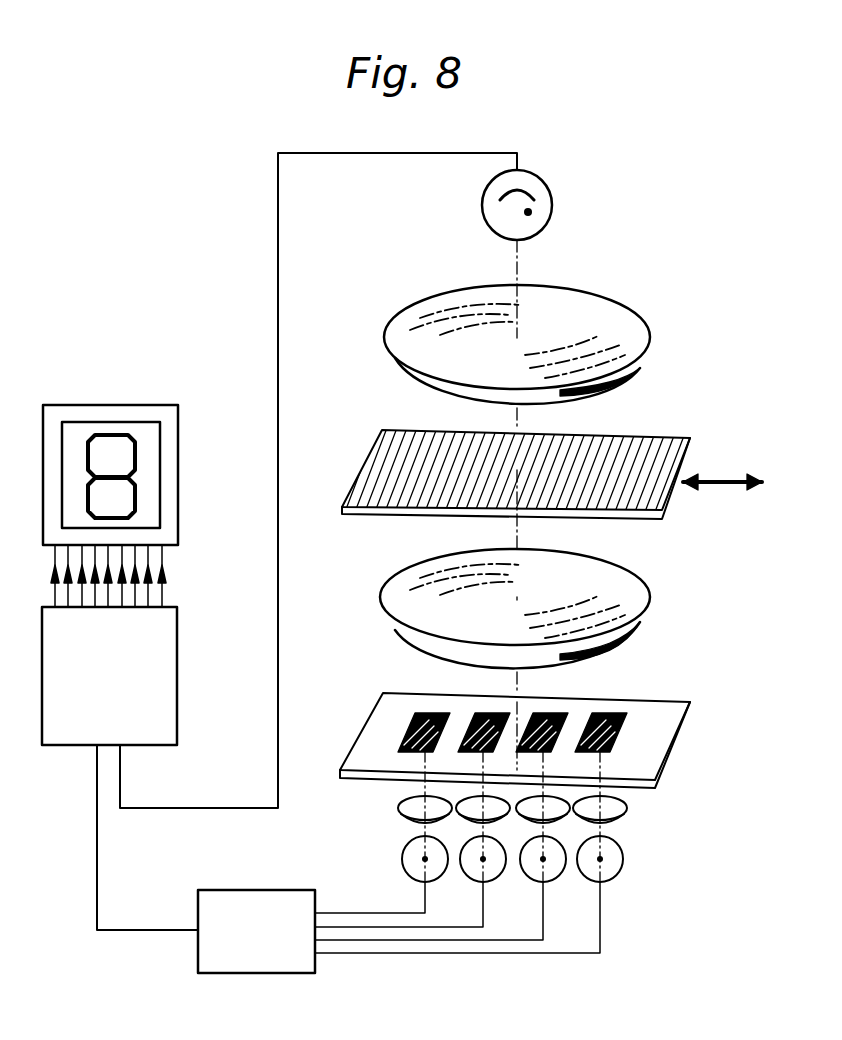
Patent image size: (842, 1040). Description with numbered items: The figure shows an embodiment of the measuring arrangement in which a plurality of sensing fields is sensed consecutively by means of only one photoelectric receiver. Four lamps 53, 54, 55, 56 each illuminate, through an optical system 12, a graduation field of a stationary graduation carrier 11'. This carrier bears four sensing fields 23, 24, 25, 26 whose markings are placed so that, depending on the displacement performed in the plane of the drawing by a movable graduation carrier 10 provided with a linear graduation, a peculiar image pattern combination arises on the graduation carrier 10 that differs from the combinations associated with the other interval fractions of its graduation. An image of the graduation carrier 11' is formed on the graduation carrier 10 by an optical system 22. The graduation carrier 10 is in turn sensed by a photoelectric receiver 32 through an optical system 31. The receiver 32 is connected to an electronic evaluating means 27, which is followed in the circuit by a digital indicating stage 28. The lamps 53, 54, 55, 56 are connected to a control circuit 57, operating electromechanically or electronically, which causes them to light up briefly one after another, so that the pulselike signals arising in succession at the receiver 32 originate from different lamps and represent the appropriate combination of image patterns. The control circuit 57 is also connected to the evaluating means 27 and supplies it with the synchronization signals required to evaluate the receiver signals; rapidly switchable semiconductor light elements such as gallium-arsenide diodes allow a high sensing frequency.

The graduation carrier 10 is at (382, 464).
The graduation carrier 11' is at (501, 740).
The optical system 12 is at (556, 792).
The optical system 22 is at (632, 608).
The sensing field 23 is at (410, 725).
The sensing field 24 is at (488, 718).
The sensing field 25 is at (555, 720).
The sensing field 26 is at (617, 718).
The electronic evaluating means 27 is at (163, 677).
The digital indicating stage 28 is at (165, 488).
The optical system 31 is at (632, 338).
The photoelectric receiver 32 is at (552, 208).
The lamp 53 is at (402, 856).
The lamp 54 is at (468, 872).
The lamp 55 is at (558, 872).
The lamp 56 is at (623, 856).
The control circuit 57 is at (258, 962).